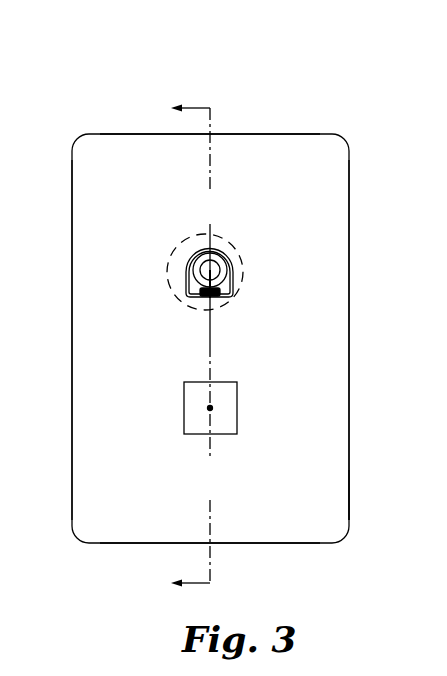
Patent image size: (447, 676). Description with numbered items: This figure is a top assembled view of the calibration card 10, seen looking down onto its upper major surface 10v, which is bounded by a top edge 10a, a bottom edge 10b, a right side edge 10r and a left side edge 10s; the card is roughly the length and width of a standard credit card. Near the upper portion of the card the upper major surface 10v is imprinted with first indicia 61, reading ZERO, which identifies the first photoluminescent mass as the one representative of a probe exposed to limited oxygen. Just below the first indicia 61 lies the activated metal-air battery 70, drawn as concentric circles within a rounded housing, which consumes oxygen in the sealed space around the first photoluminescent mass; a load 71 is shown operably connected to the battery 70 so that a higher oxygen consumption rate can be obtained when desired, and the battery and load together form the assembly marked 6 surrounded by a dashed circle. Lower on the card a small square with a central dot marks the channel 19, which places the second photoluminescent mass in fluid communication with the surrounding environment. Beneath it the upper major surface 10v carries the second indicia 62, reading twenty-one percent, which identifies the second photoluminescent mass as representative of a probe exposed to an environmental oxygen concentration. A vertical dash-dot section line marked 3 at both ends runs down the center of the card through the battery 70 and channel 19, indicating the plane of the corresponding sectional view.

The calibration card 10 is at (86, 68).
The top edge 10a is at (262, 134).
The right side edge 10r is at (349, 178).
The left side edge 10s is at (72, 498).
The upper major surface 10v is at (338, 488).
The bottom edge 10b is at (293, 543).
The section line 3- 3 is at (187, 346).
The first indicia 61 is at (183, 200).
The second indicia 62 is at (240, 478).
The dial / knob assembly 6 is at (235, 292).
The activated metal-air battery 70 is at (216, 264).
The load 71 is at (200, 293).
The channel 19 is at (217, 402).